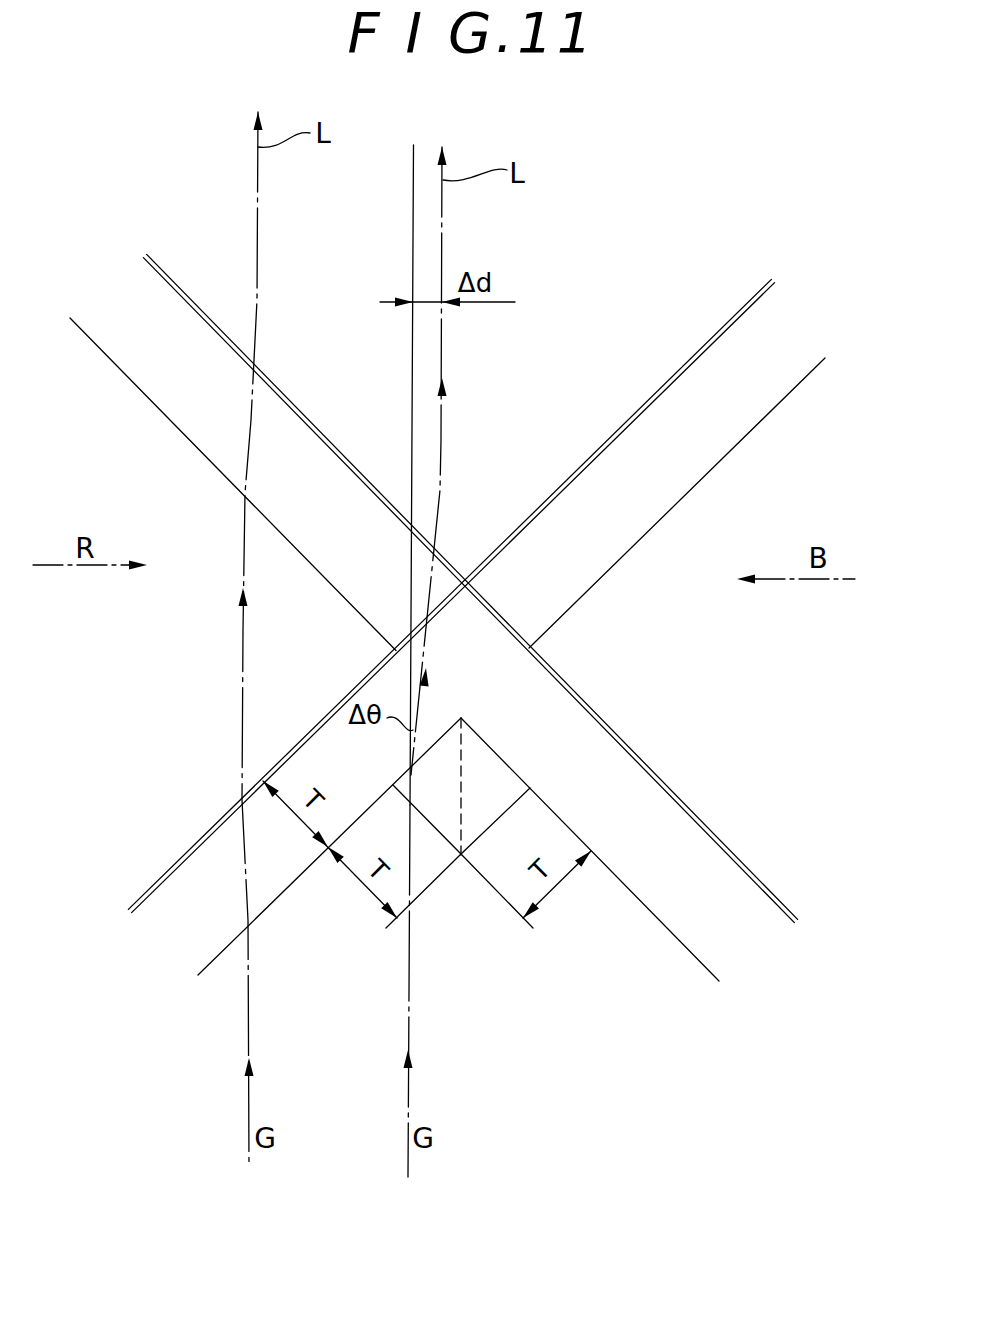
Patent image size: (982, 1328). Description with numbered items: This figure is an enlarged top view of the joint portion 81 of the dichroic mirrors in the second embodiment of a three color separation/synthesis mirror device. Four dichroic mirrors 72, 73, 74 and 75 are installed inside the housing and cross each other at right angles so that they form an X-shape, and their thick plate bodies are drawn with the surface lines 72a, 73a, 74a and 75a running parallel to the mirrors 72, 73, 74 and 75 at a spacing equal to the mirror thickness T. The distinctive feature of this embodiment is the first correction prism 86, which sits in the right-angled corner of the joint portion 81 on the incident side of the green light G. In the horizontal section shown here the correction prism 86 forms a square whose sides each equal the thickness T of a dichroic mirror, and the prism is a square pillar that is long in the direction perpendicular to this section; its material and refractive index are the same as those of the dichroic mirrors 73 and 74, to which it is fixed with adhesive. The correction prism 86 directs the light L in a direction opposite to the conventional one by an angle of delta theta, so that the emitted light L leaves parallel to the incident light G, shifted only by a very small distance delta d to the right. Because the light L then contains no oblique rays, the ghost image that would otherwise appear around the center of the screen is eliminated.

The dichroic mirror 72 is at (168, 422).
The first alignment double line 72a is at (173, 280).
The dichroic mirror 73 is at (230, 947).
The second alignment double line 73a is at (162, 877).
The dichroic mirror 74 is at (692, 962).
The third alignment double line 74a is at (733, 848).
The dichroic mirror 75 is at (777, 408).
The fourth alignment double line 75a is at (678, 365).
The joint portion 81 is at (478, 518).
The first correction prism 86 is at (507, 762).